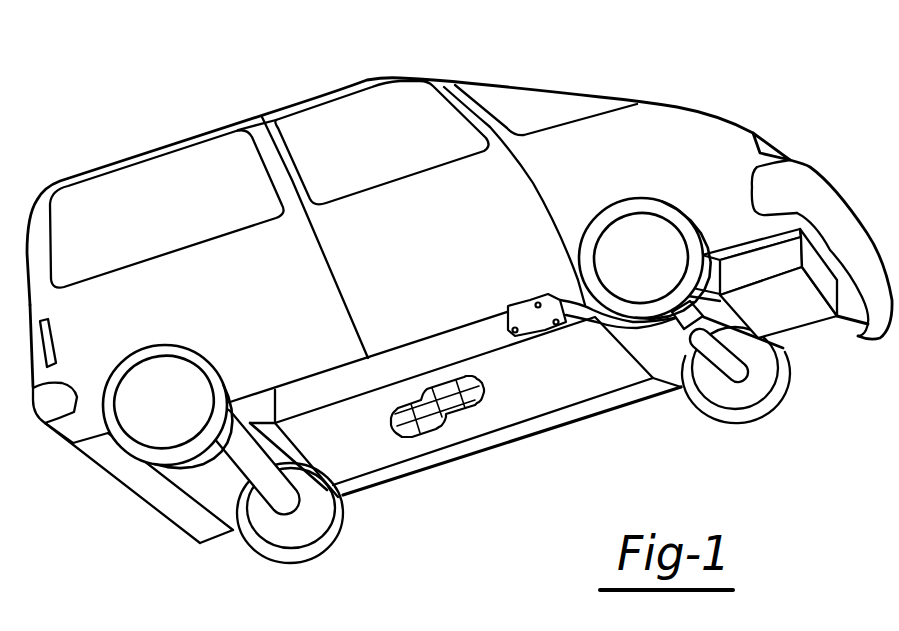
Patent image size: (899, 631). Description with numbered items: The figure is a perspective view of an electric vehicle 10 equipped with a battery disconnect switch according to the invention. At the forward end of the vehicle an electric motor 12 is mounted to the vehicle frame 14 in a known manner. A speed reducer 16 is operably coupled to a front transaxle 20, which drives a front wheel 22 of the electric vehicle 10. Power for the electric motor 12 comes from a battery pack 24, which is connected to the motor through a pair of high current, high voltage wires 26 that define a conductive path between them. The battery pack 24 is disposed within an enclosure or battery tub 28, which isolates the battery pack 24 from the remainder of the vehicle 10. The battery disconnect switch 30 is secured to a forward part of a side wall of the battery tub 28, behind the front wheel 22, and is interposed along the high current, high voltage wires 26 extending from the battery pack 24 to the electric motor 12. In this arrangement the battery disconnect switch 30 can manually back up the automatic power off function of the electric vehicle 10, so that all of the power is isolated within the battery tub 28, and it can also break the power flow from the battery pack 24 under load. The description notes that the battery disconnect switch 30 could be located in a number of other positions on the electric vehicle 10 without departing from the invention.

The electric vehicle 10 is at (673, 124).
The electric motor 12 is at (810, 310).
The vehicle frame 14 is at (848, 330).
The speed reducer 16 is at (707, 332).
The front transaxle 20 is at (735, 372).
The front wheel 22 is at (633, 282).
The battery pack 24 is at (442, 430).
The high current, high voltage wires 26 is at (649, 335).
The battery tub 28 is at (372, 457).
The battery disconnect switch 30 is at (534, 331).